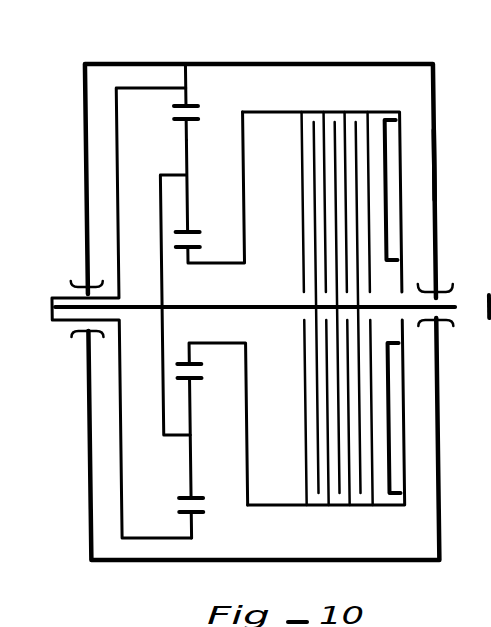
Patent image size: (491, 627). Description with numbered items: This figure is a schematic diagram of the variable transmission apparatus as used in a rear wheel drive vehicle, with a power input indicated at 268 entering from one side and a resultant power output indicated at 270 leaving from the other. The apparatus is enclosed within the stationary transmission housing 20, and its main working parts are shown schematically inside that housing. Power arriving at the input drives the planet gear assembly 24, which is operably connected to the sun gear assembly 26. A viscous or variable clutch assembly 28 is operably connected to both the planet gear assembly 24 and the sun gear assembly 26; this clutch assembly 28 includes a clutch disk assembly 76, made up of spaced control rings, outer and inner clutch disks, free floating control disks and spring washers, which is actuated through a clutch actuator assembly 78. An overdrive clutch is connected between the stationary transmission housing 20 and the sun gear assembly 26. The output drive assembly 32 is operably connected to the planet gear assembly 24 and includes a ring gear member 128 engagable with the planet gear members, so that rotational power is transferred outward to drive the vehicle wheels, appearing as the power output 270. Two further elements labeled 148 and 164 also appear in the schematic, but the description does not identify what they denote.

The stationary transmission housing 20 is at (333, 64).
The clutch disk assembly 76 is at (337, 138).
The viscous clutch assembly 28 is at (401, 161).
The clutch actuator assembly 78 is at (388, 415).
The output drive assembly 32 is at (116, 137).
The ring gear member 128 is at (188, 64).
The planet gear assembly 24 is at (187, 140).
The sun gear assembly 26 is at (223, 263).
The lower capacitor circuit 164 is at (334, 440).
The power output 270 is at (72, 288).
The right shaft bearing 148 is at (438, 292).
The power input 268 is at (462, 165).